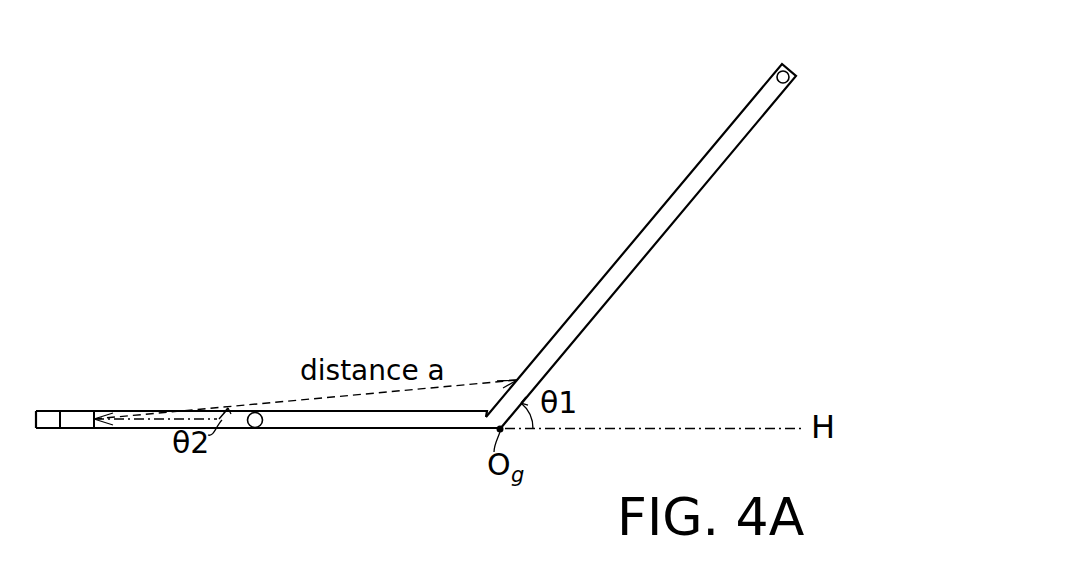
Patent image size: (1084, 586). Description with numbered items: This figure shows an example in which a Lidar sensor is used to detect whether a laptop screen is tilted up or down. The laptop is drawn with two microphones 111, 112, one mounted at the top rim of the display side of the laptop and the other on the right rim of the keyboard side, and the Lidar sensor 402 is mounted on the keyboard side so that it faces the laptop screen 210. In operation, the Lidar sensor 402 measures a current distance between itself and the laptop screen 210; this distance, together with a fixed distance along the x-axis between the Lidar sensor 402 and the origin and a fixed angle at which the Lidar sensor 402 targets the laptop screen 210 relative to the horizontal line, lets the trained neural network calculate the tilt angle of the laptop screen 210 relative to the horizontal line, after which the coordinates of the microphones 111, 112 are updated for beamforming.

The microphone 111 is at (786, 70).
The microphone 112 is at (253, 428).
The laptop screen 210 is at (630, 273).
The Lidar sensor 402 is at (82, 424).